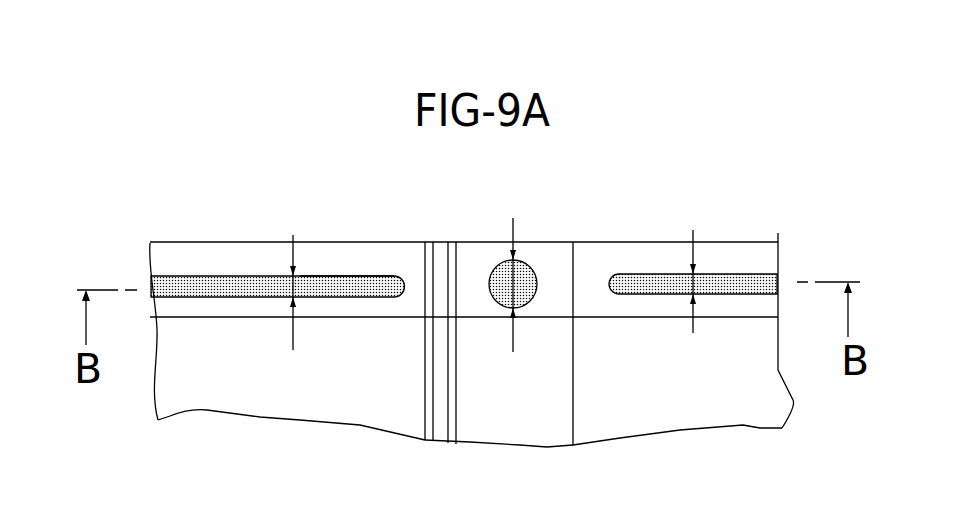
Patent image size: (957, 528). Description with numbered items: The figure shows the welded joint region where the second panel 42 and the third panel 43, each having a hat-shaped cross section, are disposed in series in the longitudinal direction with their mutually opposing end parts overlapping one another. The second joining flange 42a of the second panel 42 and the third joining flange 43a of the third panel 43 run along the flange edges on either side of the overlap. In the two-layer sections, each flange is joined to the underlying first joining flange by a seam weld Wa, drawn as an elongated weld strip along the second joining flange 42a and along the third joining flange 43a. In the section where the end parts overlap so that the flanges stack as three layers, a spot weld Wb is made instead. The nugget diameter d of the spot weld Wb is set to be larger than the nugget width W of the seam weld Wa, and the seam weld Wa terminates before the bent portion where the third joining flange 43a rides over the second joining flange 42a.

The second panel 42 is at (707, 229).
The second joining flange 42a is at (740, 255).
The third panel 43 is at (260, 233).
The third joining flange 43a is at (238, 262).
The seam weld Wa is at (354, 290).
The spot weld Wb is at (498, 291).
The nugget width of the seam weld W is at (298, 288).
The nugget diameter of the spot weld d is at (523, 284).